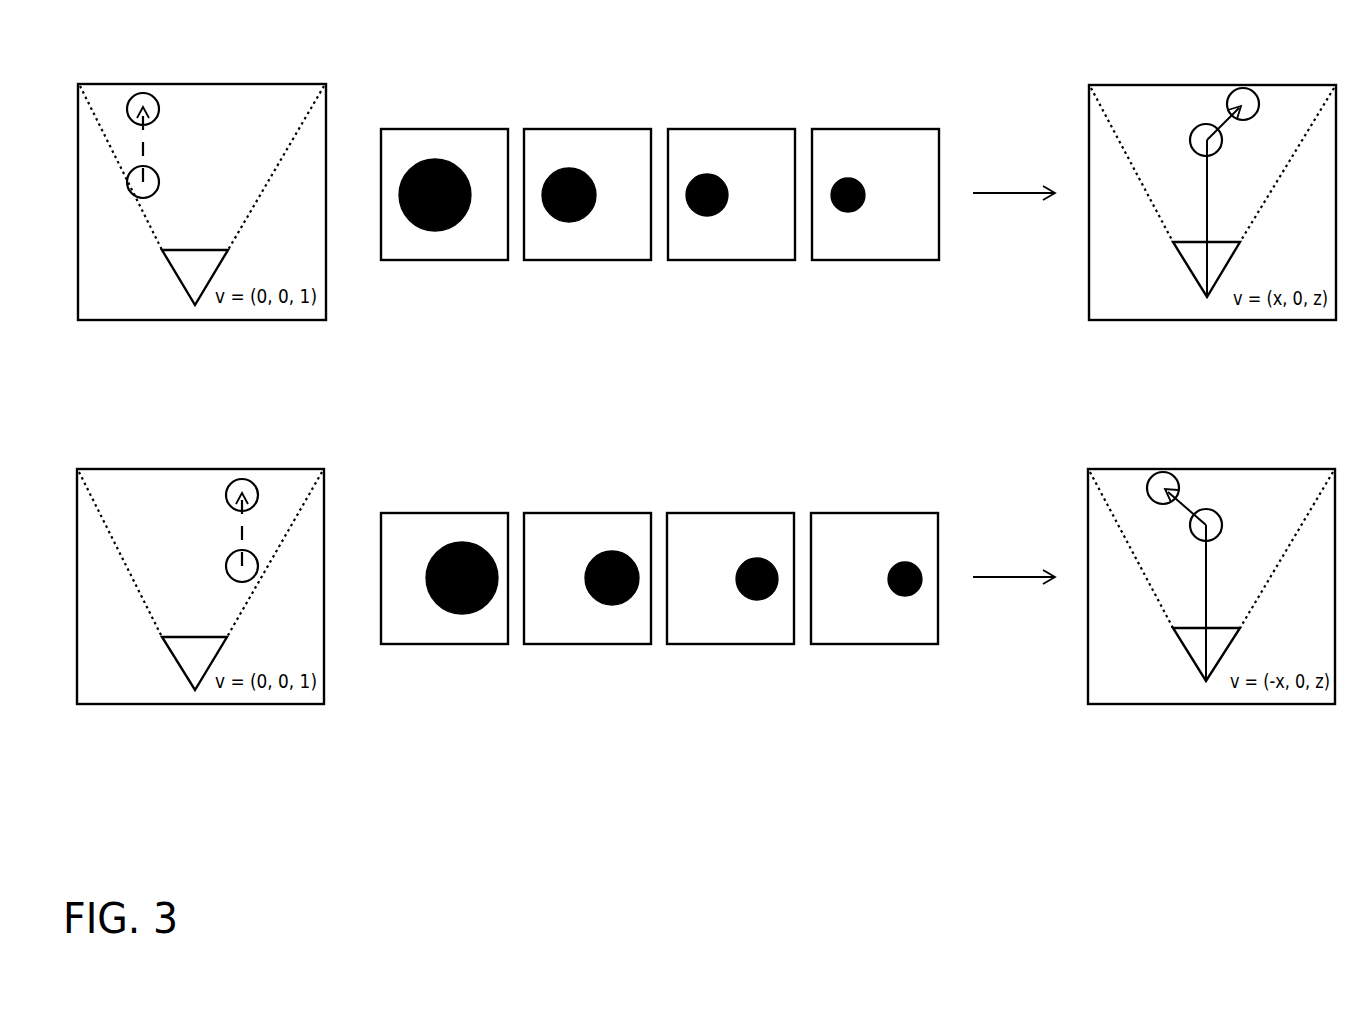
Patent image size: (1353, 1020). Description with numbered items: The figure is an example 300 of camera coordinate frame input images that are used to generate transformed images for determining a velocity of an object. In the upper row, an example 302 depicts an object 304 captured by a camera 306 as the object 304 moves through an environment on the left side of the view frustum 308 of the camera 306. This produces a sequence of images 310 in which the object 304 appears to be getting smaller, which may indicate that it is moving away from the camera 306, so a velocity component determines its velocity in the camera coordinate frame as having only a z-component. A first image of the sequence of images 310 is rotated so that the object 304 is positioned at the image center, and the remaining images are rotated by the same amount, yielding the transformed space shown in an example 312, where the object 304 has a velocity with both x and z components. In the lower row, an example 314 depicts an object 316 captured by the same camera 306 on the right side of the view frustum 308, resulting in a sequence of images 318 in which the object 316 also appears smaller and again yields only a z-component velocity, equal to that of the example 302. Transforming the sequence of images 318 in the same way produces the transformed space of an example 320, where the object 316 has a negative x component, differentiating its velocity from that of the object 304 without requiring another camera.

The example 300 is at (138, 39).
The example 302 is at (263, 84).
The object 304 is at (158, 187).
The camera 306 is at (178, 275).
The view frustum 308 is at (255, 205).
The sequence of images 310 is at (761, 293).
The example 312 is at (1275, 85).
The example 314 is at (265, 469).
The object 316 is at (226, 572).
The sequence of images 318 is at (780, 675).
The example 320 is at (1275, 469).